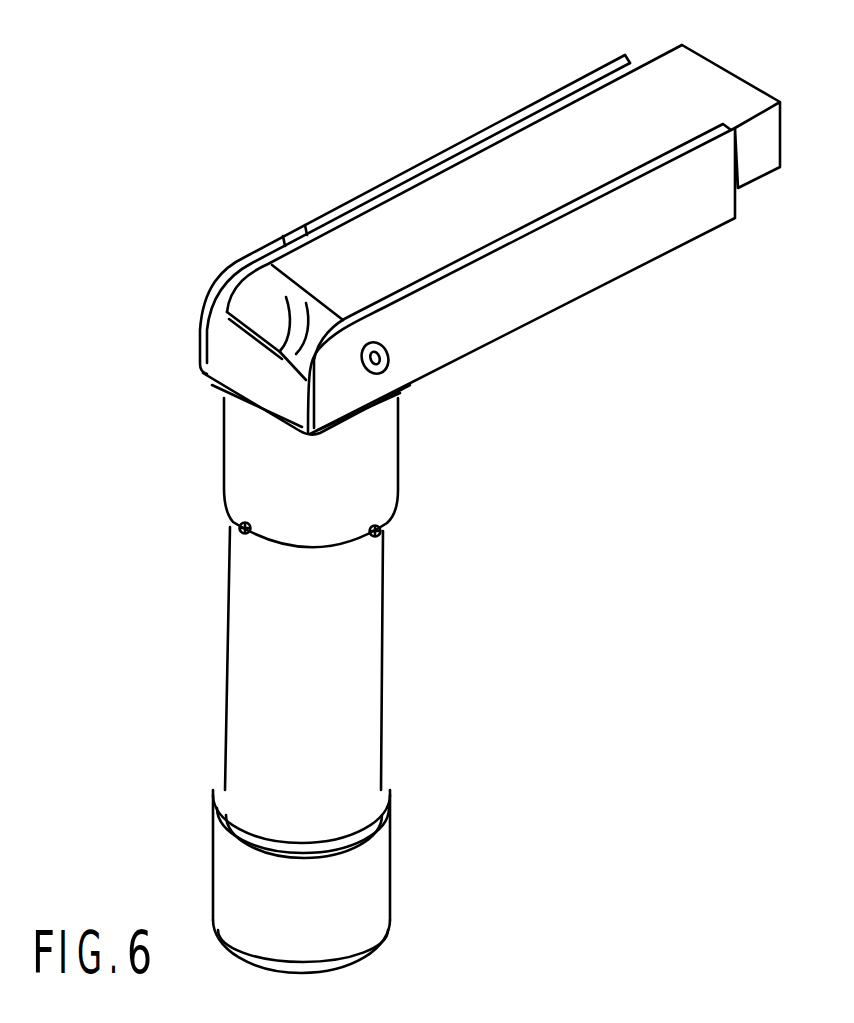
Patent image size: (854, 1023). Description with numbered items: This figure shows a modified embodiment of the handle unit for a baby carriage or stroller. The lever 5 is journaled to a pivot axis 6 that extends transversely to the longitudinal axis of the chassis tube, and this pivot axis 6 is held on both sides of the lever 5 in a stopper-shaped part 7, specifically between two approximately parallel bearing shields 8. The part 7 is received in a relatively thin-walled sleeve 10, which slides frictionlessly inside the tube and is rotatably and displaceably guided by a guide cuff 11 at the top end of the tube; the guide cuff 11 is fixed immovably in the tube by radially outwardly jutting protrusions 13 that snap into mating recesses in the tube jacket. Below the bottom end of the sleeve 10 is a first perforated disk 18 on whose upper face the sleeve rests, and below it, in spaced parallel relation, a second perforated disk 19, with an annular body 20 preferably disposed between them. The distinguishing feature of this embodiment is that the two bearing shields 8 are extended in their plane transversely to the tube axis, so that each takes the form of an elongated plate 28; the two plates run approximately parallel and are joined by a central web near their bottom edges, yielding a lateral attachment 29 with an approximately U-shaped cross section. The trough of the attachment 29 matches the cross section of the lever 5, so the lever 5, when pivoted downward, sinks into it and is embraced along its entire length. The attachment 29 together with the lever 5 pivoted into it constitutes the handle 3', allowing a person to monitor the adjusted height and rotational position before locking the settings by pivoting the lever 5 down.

The handle 3' is at (418, 185).
The lever 5 is at (700, 77).
The pivot axis 6 is at (388, 362).
The part 7 is at (257, 378).
The bearing shields 8 is at (217, 372).
The thin-walled sleeve 10 is at (358, 670).
The guide cuff 11 is at (377, 492).
The protrusions 13 is at (387, 529).
The first perforated disk 18 is at (388, 793).
The second perforated disk 19 is at (360, 955).
The annular body 20 is at (360, 880).
The elongated plate 28 is at (569, 262).
The lateral attachment 29 is at (658, 242).